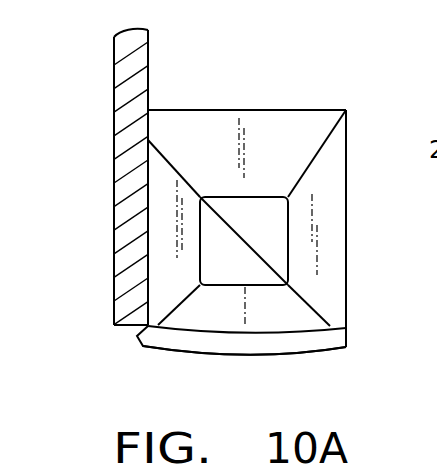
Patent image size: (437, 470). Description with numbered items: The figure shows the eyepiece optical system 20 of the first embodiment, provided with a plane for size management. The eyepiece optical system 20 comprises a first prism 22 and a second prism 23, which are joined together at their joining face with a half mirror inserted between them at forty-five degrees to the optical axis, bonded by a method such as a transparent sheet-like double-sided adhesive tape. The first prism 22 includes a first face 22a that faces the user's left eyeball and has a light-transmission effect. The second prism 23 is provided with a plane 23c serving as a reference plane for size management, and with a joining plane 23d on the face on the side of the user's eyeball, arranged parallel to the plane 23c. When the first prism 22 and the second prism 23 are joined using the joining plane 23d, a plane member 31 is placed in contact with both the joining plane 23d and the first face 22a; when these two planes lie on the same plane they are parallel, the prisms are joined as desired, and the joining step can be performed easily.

The plane member 31 is at (150, 47).
The first prism 22 is at (160, 268).
The first face 22a is at (150, 205).
The second prism 23 is at (327, 190).
The plane 23c is at (347, 247).
The joining plane 23d is at (148, 128).
The eyepiece optical system 20 is at (356, 292).